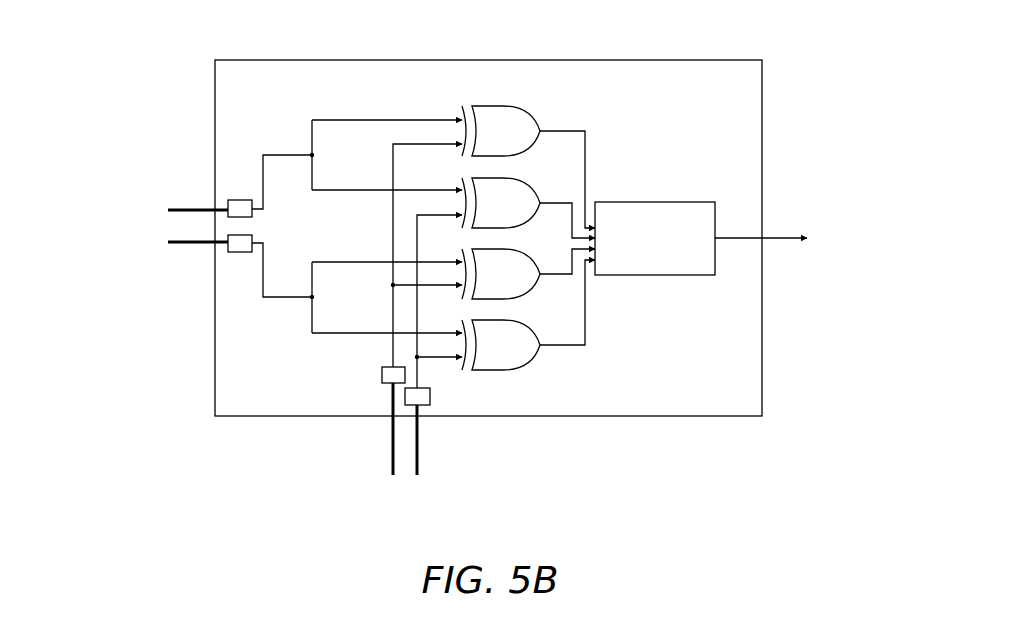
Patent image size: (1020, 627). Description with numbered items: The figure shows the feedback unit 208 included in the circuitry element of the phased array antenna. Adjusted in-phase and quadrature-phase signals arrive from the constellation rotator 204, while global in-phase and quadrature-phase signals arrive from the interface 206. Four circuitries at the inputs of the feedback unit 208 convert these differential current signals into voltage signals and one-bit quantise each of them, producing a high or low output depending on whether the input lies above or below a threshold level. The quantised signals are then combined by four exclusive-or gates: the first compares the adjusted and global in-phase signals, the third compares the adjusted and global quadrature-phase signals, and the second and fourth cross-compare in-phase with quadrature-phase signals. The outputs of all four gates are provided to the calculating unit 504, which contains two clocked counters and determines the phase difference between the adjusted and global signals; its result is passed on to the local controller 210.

The feedback unit 208 is at (252, 60).
The constellation rotator 204 is at (150, 228).
The interface 206 is at (405, 451).
The local controller 210 is at (798, 227).
The calculating unit 504 is at (668, 202).